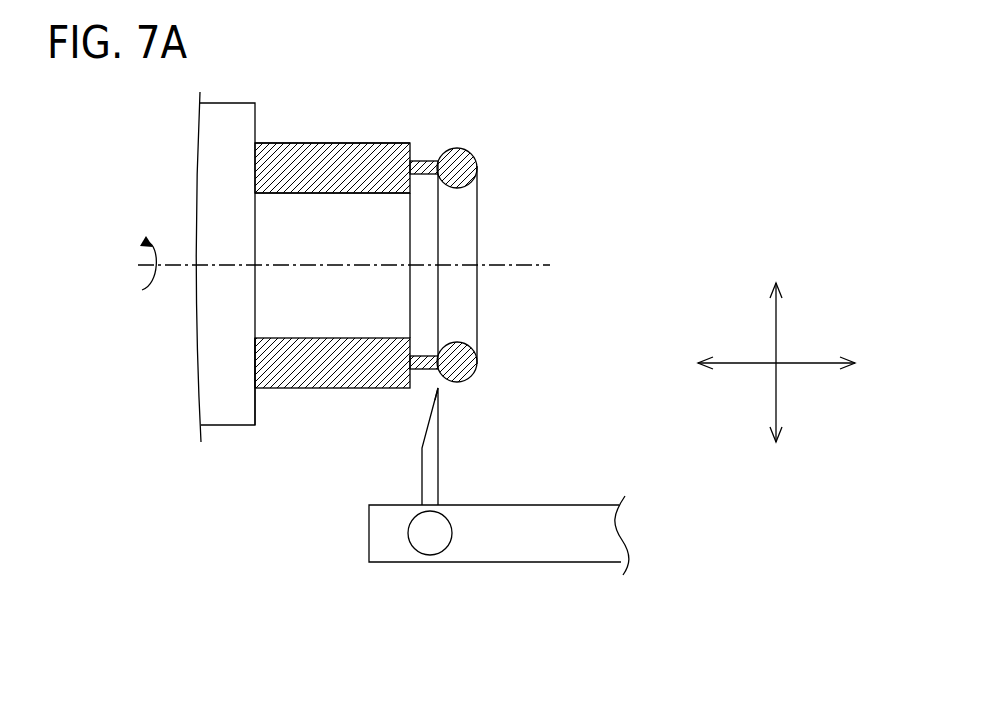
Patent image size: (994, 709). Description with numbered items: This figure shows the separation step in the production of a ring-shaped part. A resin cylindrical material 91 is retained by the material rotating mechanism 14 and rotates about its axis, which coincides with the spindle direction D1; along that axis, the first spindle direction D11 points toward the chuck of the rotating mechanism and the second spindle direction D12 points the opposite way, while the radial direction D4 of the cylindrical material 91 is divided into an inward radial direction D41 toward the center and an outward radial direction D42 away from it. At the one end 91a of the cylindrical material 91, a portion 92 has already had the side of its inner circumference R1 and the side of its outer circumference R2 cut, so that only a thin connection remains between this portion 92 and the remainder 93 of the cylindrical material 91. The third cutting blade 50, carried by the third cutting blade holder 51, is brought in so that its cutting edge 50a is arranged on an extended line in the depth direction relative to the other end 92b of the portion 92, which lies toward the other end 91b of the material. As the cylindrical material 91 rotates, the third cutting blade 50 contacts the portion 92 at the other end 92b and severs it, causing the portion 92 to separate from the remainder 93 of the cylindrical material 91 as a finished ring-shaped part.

The material rotating mechanism 14 is at (255, 132).
The cylindrical material 91 is at (346, 238).
The remainder of the cylindrical material 93 is at (332, 363).
The one end of the cylindrical material 91a is at (478, 364).
The other end 91b is at (255, 364).
The portion of the cylindrical material 92 is at (473, 158).
The other end of the portion 92b is at (441, 374).
The inner circumference R1 is at (387, 194).
The outer circumference R2 is at (332, 143).
The third cutting blade 50 is at (477, 446).
The cutting edge 50a is at (440, 390).
The third cutting blade holder 51 is at (520, 552).
The spindle direction D1 is at (776, 391).
The first spindle direction D11 is at (683, 365).
The second spindle direction D12 is at (870, 365).
The radial direction D4 is at (806, 365).
The inward radial direction D41 is at (776, 279).
The outward radial direction D42 is at (776, 448).